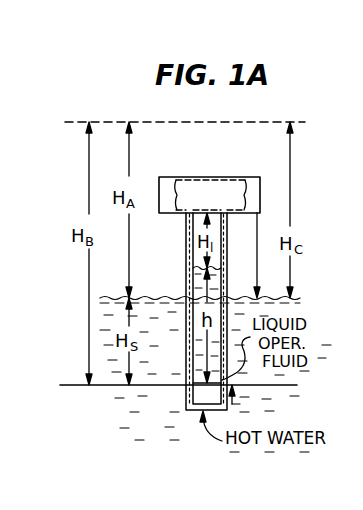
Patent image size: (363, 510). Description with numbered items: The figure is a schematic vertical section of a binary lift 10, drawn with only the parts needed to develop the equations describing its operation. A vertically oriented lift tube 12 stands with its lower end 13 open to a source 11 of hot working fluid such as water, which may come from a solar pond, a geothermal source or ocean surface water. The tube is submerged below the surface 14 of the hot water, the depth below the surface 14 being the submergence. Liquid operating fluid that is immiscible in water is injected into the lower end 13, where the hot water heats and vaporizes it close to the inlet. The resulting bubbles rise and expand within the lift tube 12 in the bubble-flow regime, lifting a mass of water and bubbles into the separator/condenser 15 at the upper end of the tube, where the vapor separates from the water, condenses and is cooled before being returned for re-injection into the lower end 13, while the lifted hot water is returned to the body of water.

The binary lift 10 is at (243, 167).
The source of hot working fluid 11 is at (174, 331).
The lift tube 12 is at (186, 353).
The lower end of lift tube 13 is at (186, 398).
The surface of the water 14 is at (152, 296).
The separator/condenser 15 is at (170, 177).